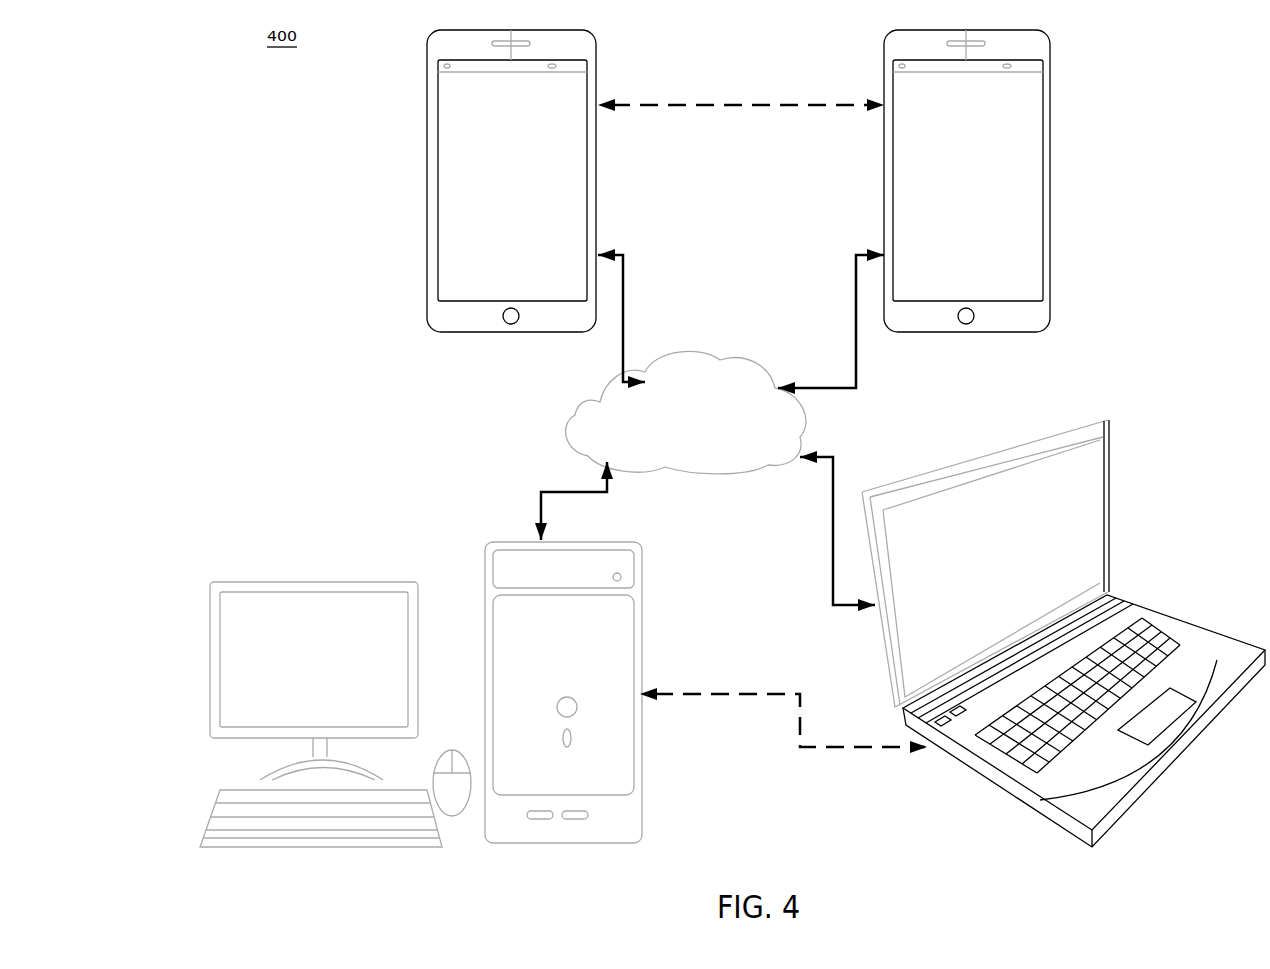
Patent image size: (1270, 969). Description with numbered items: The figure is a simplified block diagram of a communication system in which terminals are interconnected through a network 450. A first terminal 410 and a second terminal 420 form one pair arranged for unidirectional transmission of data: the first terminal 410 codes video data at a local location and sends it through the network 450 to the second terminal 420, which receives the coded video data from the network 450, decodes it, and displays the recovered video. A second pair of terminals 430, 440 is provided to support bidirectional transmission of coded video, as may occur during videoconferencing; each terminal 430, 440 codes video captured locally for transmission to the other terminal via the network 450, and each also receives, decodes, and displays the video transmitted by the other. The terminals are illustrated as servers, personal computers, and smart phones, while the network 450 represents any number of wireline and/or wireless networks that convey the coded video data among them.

The first terminal 410 is at (1112, 488).
The second terminal 420 is at (639, 803).
The terminal 430 is at (428, 131).
The terminal 440 is at (884, 131).
The network 450 is at (686, 412).